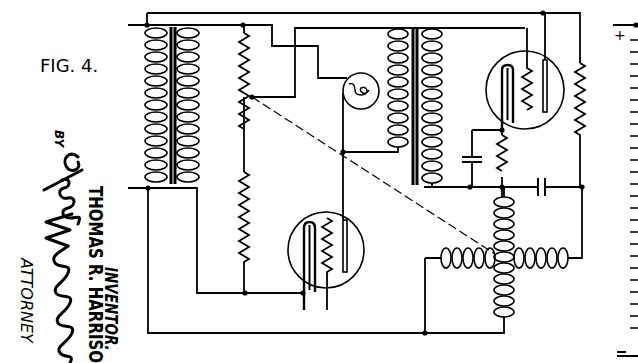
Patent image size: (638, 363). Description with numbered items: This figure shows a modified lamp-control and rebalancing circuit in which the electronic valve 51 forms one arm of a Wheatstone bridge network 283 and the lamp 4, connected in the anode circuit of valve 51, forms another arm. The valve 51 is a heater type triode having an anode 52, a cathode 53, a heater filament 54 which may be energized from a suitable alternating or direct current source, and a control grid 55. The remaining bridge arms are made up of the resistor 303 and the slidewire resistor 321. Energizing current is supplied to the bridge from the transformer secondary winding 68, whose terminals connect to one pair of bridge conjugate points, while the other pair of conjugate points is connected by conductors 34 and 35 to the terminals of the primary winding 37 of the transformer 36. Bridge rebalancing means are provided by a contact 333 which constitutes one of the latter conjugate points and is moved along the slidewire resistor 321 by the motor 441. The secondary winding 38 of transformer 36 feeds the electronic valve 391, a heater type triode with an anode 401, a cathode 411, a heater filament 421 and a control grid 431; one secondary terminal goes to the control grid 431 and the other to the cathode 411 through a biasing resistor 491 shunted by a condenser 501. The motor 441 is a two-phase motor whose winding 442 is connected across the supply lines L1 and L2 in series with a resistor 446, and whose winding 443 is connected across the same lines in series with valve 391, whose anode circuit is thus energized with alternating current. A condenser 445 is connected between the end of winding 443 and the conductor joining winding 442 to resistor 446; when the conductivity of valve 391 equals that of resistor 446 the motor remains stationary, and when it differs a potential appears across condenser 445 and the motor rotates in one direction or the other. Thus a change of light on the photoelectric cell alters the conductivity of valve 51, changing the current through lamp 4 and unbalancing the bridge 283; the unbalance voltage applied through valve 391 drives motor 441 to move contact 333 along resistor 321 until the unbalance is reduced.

The alternating current supply line L1 is at (137, 26).
The alternating current supply line L2 is at (139, 187).
The transformer secondary winding 68 is at (198, 76).
The contact 333 is at (252, 97).
The slidewire resistor 321 is at (241, 117).
The Wheatstone bridge network 283 is at (300, 153).
The resistor 303 is at (241, 221).
The lamp 4 is at (351, 77).
The conductor 35 is at (372, 28).
The transformer primary winding 37 is at (392, 65).
The transformer secondary winding 38 is at (444, 72).
The conductor 34 is at (398, 152).
The transformer 36 is at (425, 184).
The control grid 431 is at (531, 127).
The cathode 411 is at (500, 72).
The electronic valve 391 is at (499, 108).
The heater filament 421 is at (524, 66).
The anode 401 is at (548, 72).
The resistor 446 is at (585, 112).
The biasing resistor 491 is at (509, 150).
The condenser 501 is at (456, 157).
The condenser 445 is at (541, 182).
The motor 441 is at (565, 238).
The motor winding 442 is at (478, 269).
The motor winding 443 is at (514, 297).
The electronic valve 51 is at (364, 254).
The cathode 53 is at (304, 228).
The heater filament 54 is at (323, 226).
The control grid 55 is at (331, 219).
The anode 52 is at (349, 238).